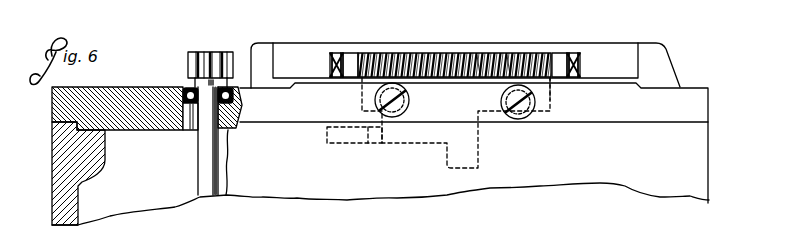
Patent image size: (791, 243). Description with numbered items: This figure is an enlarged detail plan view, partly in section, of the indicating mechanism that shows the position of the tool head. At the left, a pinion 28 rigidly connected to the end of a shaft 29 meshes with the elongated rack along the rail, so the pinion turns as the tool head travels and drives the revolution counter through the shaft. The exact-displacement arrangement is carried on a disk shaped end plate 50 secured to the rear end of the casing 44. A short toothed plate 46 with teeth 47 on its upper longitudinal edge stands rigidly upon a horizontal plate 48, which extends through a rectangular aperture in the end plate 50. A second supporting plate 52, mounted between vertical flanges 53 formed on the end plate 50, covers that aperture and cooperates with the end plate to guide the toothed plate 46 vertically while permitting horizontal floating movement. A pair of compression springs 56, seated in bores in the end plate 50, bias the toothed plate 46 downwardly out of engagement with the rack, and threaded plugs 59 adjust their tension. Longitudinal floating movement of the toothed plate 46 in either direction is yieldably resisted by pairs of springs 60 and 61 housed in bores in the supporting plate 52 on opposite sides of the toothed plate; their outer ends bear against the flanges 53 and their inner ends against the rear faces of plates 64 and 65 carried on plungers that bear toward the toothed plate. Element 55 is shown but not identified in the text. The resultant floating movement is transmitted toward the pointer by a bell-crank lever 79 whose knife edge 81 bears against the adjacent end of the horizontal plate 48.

The pinion 28 is at (195, 60).
The shaft 29 is at (203, 168).
The casing 44 is at (692, 153).
The toothed plate 46 is at (508, 55).
The teeth 47 is at (478, 55).
The horizontal plate 48 is at (550, 100).
The end plate 50 is at (695, 108).
The supporting plate 52 is at (297, 50).
The vertical flanges 53 is at (252, 57).
The worm 55 is at (428, 55).
The compression springs 56 is at (410, 101).
The plugs 59 is at (376, 99).
The springs 60 is at (340, 53).
The springs 61 is at (580, 56).
The plate 64 is at (352, 58).
The plate 65 is at (559, 58).
The bell-crank lever 79 is at (341, 143).
The knife edge 81 is at (379, 143).